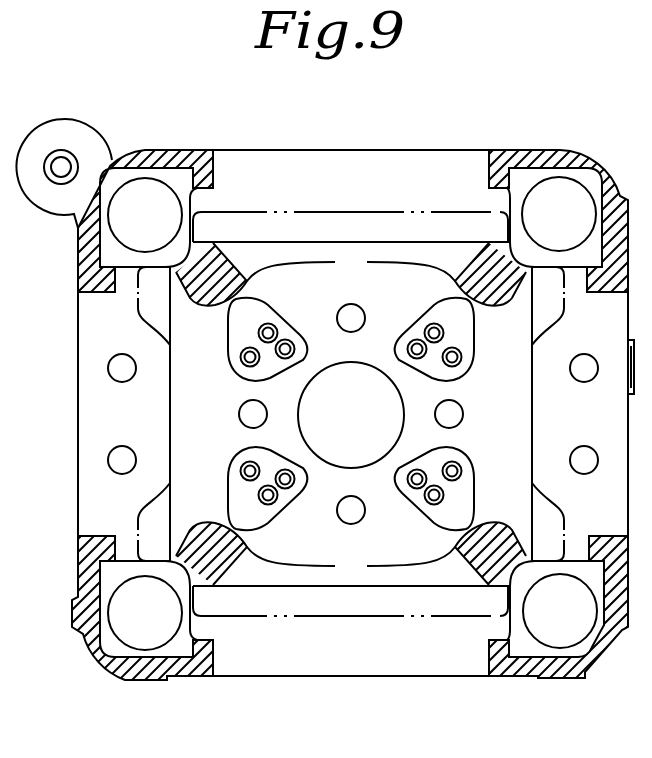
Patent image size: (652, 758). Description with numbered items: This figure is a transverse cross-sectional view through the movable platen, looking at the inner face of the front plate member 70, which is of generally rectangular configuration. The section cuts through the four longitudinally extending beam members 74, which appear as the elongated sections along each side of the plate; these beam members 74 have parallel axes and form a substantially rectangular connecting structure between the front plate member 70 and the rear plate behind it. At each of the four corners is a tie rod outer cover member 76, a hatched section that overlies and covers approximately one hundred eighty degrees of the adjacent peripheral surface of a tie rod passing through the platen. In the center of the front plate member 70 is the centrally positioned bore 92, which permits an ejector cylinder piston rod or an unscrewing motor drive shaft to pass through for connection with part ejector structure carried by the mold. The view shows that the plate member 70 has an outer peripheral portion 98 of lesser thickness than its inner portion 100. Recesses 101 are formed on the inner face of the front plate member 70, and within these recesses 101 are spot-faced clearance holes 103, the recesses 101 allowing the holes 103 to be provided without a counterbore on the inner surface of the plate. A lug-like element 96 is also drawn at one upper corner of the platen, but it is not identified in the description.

The front plate member 70 is at (326, 416).
The beam members 74 is at (350, 414).
The tie rod outer cover members 76 is at (187, 154).
The bore 92 is at (307, 383).
The mounting lug 96 is at (97, 137).
The outer peripheral portion 98 is at (86, 330).
The inner portion 100 is at (183, 408).
The recesses 101 is at (428, 305).
The spot-faced clearance holes 103 is at (408, 348).